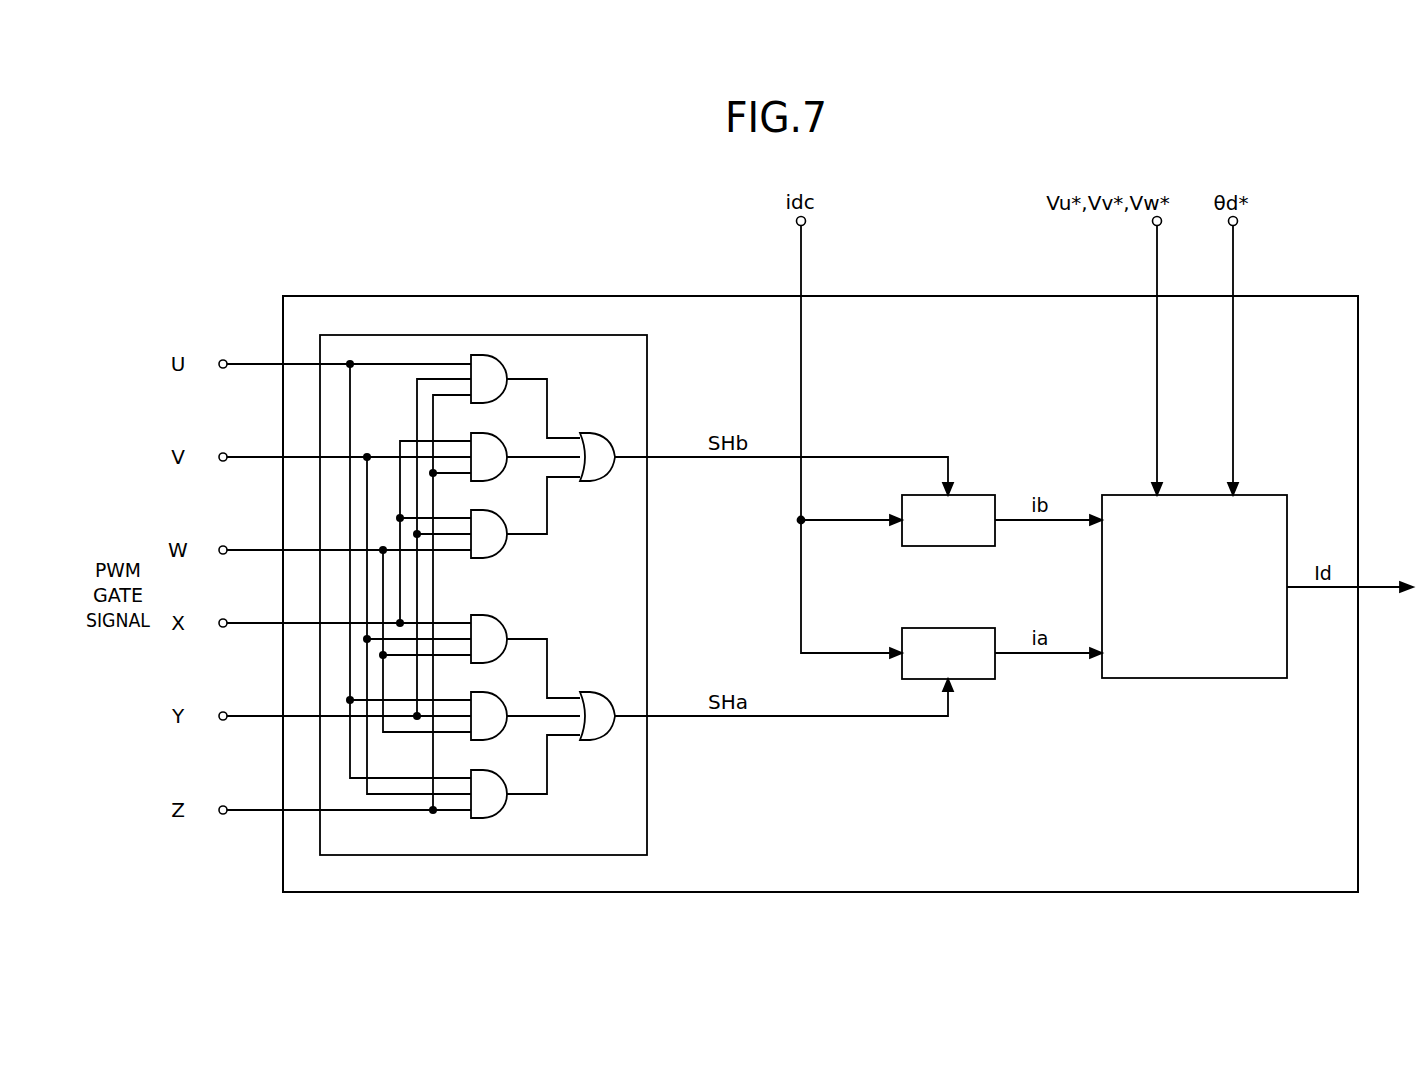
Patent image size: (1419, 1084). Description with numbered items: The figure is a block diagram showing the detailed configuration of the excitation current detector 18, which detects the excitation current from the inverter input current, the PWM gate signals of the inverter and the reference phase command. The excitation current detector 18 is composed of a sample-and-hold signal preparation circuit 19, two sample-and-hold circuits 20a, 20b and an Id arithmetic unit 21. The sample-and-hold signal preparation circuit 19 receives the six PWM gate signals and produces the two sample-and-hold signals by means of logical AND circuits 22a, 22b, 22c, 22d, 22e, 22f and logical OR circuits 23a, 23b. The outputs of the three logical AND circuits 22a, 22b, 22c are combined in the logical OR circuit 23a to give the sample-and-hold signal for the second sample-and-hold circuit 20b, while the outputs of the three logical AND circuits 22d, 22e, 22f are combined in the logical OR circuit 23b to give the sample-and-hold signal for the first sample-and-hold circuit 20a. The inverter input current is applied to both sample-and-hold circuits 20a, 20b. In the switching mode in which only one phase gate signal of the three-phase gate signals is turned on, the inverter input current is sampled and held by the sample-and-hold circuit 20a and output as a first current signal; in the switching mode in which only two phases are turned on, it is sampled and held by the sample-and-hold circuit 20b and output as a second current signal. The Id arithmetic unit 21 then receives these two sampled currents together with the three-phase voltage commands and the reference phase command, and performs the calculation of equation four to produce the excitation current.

The excitation current detector 18 is at (570, 296).
The sample-and-hold signal preparation circuit 19 is at (647, 820).
The sample-and-hold circuit 20a is at (946, 628).
The sample-and-hold circuit 20b is at (950, 546).
The Id arithmetic unit 21 is at (1196, 678).
The logical AND circuit 22a is at (497, 400).
The logical AND circuit 22b is at (497, 478).
The logical AND circuit 22c is at (497, 555).
The logical AND circuit 22d is at (497, 660).
The logical AND circuit 22e is at (497, 737).
The logical AND circuit 22f is at (497, 815).
The logical OR circuit 23a is at (598, 478).
The logical OR circuit 23b is at (598, 737).